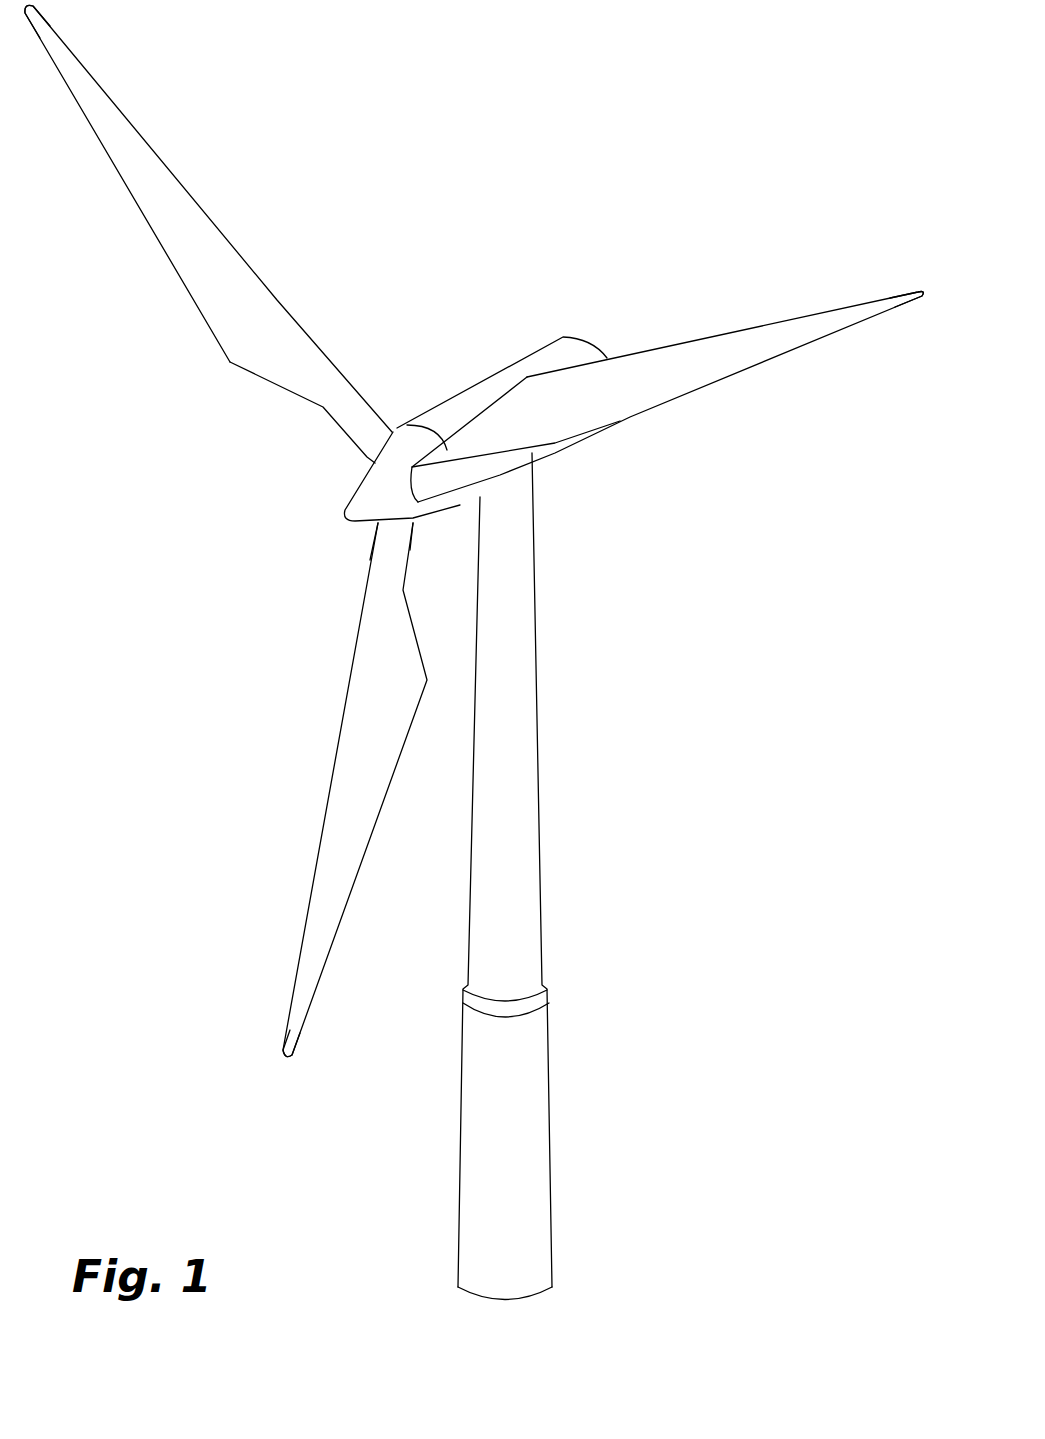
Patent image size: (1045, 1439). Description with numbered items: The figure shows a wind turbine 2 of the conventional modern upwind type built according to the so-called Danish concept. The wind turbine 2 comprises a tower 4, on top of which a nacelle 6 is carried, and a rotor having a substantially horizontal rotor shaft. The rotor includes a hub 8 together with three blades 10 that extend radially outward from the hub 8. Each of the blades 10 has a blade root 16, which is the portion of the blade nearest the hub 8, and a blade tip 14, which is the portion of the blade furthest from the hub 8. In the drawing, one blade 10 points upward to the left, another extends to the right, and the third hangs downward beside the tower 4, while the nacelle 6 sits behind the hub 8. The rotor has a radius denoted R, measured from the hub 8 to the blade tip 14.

The wind turbine 2 is at (640, 815).
The tower 4 is at (525, 730).
The nacelle 6 is at (465, 403).
The hub 8 is at (362, 497).
The blade 10 is at (243, 332).
The blade tip 14 is at (80, 67).
The blade root 16 is at (370, 453).